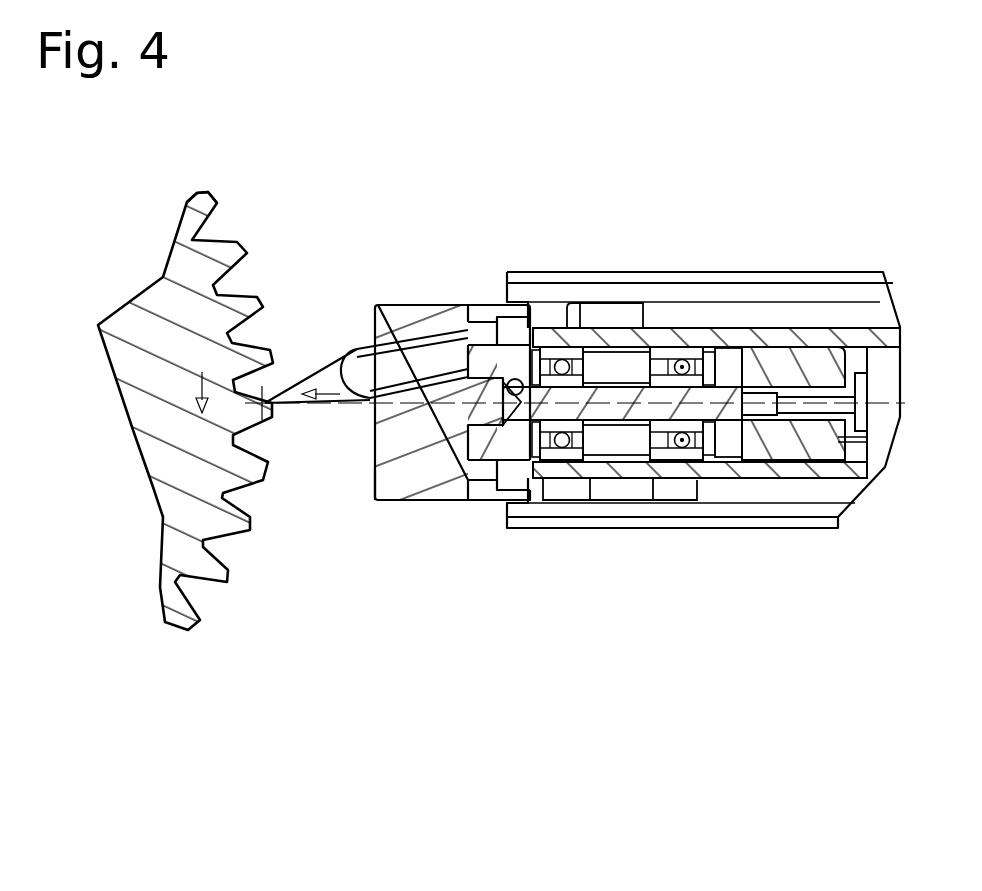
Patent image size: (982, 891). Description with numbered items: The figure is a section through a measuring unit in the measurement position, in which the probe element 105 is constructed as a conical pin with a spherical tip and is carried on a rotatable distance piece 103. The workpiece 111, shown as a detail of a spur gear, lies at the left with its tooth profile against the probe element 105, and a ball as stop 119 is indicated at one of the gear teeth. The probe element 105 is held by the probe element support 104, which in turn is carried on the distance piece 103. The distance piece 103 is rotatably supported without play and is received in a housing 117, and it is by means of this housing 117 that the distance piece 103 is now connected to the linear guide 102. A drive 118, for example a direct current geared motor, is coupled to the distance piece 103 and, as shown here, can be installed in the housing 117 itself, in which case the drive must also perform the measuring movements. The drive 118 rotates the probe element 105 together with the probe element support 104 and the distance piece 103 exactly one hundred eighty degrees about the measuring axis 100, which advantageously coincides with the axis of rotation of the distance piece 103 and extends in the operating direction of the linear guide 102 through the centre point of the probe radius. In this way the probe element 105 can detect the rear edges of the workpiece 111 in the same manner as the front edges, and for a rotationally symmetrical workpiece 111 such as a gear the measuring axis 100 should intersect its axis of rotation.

The measuring axis 100 is at (439, 561).
The linear guide 102 is at (703, 309).
The distance piece 103 is at (536, 561).
The probe element support 104 is at (332, 643).
The probe element 105 is at (441, 247).
The workpiece 111 is at (219, 504).
The housing 117 is at (624, 582).
The drive of the distance piece 118 is at (695, 582).
The ball as stop 119 is at (317, 154).